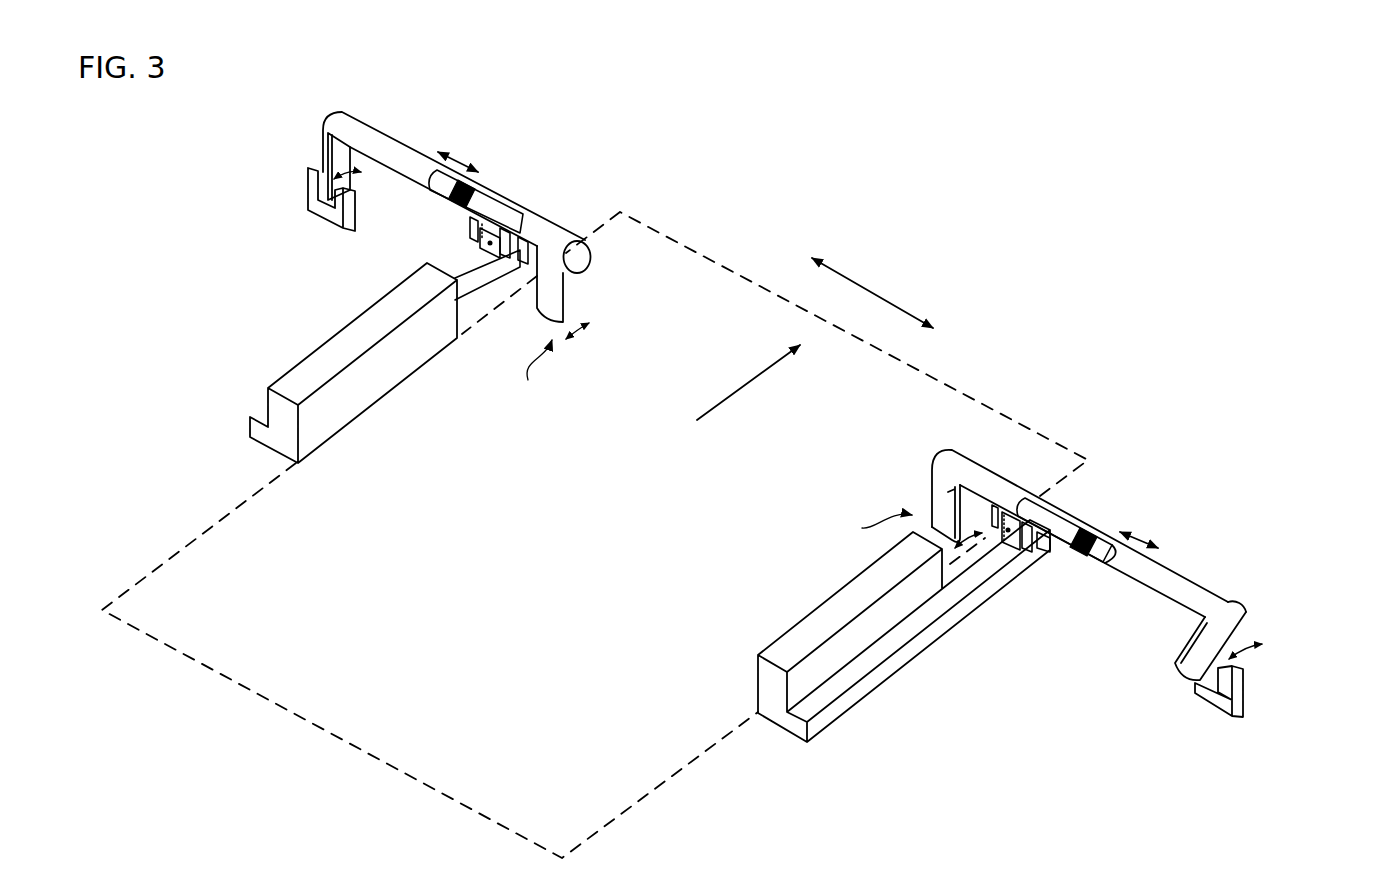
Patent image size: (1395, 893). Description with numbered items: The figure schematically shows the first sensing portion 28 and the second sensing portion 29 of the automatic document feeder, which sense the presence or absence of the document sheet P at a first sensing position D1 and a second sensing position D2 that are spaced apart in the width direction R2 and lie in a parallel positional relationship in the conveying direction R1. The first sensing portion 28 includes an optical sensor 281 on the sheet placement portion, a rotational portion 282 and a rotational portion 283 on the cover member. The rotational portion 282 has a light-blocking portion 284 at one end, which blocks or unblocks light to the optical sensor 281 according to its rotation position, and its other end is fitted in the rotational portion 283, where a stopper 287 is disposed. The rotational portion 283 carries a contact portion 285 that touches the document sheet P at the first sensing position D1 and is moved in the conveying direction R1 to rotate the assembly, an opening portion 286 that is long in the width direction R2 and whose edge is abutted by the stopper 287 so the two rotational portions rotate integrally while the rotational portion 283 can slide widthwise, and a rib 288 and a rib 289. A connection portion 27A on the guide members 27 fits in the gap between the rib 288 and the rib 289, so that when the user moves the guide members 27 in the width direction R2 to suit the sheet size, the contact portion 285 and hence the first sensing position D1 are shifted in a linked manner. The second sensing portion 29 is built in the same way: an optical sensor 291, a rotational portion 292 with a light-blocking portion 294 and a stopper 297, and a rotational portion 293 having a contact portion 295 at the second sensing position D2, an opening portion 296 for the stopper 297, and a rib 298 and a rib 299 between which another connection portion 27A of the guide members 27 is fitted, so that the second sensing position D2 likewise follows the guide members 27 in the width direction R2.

The guide members 27 is at (300, 366).
The connection portion 27A is at (490, 246).
The first sensing portion 28 is at (1298, 610).
The second sensing portion 29 is at (254, 186).
The optical sensor 281 is at (1246, 693).
The rotational portion 282 is at (1203, 583).
The rotational portion 283 is at (1080, 515).
The light-blocking portion 284 is at (1182, 675).
The contact portion 285 is at (930, 503).
The opening portion 286 is at (1098, 568).
The stopper 287 is at (1097, 528).
The rib 288 is at (1037, 552).
The rib 289 is at (987, 493).
The optical sensor 291 is at (337, 228).
The rotational portion 292 is at (392, 133).
The rotational portion 293 is at (530, 208).
The light-blocking portion 294 is at (323, 152).
The contact portion 295 is at (567, 290).
The opening portion 296 is at (493, 190).
The stopper 297 is at (463, 203).
The rib 298 is at (467, 230).
The rib 299 is at (513, 275).
The document sheet P is at (755, 282).
The conveying direction R1 is at (757, 378).
The width direction R2 is at (866, 291).
The first sensing position D1 is at (872, 521).
The second sensing position D2 is at (538, 374).